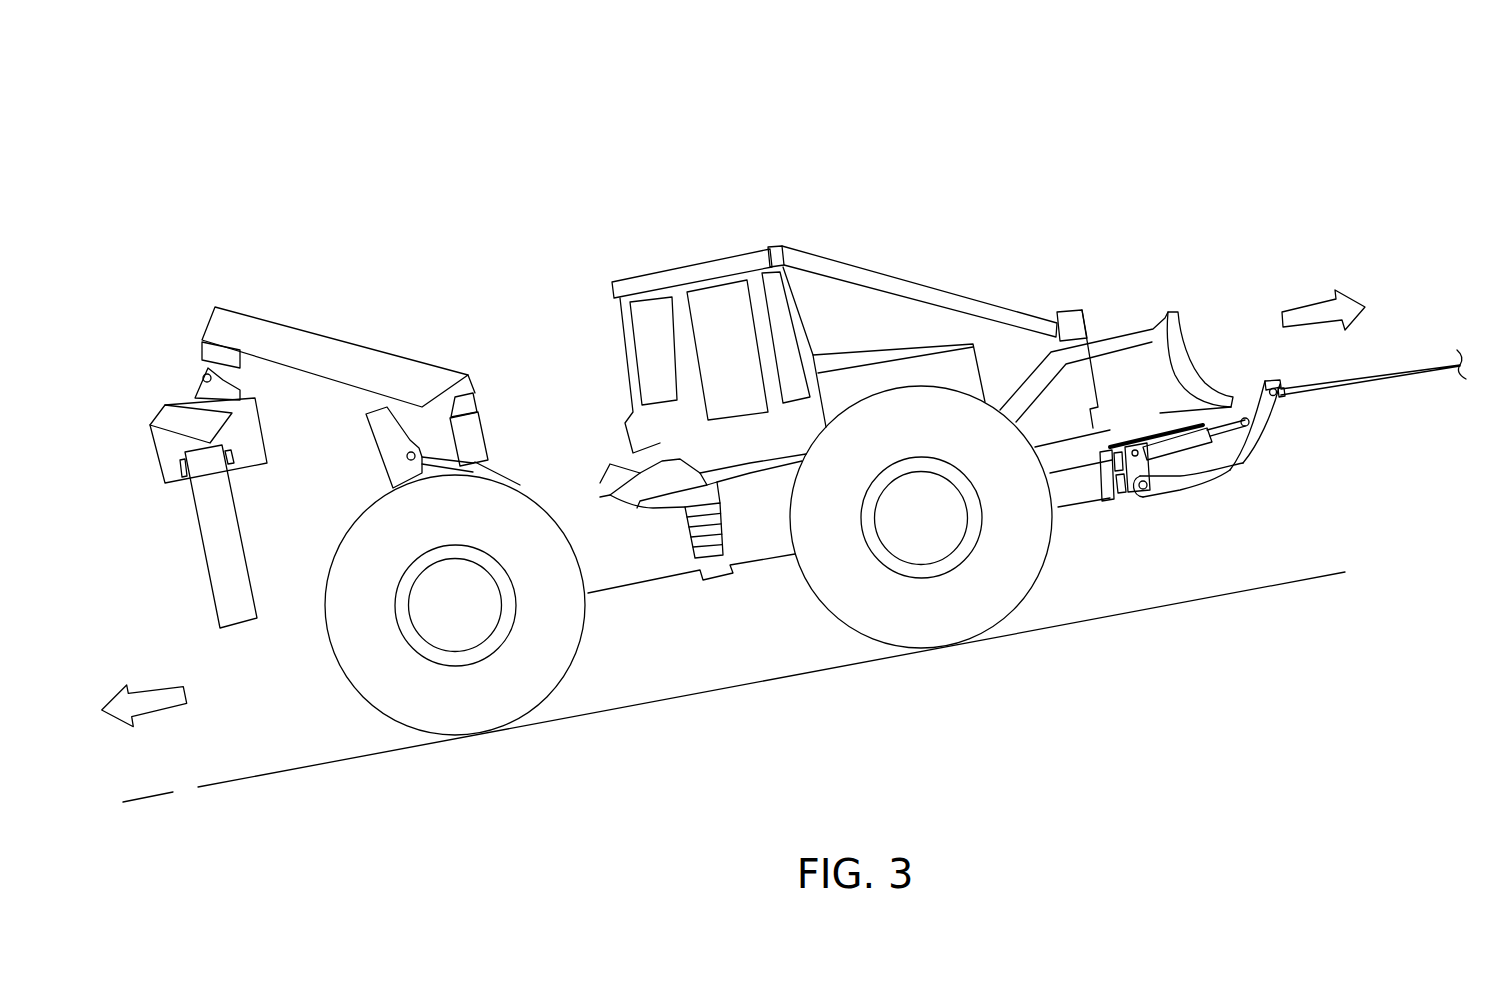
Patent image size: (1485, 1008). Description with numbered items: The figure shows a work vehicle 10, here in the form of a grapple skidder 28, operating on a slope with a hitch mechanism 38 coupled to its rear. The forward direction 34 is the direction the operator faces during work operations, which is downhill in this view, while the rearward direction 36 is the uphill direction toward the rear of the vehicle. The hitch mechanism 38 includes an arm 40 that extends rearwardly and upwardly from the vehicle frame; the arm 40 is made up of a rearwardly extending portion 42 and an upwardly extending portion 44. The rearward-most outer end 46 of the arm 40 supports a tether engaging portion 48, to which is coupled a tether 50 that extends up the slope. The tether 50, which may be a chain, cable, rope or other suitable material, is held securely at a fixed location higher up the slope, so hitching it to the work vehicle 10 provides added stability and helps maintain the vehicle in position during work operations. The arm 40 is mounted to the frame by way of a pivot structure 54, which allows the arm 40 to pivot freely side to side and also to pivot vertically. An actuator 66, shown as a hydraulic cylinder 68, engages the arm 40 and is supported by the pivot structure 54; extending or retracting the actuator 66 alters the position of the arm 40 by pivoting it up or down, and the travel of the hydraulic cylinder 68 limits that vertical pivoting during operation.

The work vehicle 10 is at (898, 85).
The grapple skidder 28 is at (673, 188).
The forward direction 34 is at (158, 700).
The rearward direction 36 is at (1310, 317).
The hitch mechanism 38 is at (1142, 537).
The arm 40 is at (1273, 433).
The rearwardly extending portion 42 is at (1215, 482).
The upwardly extending portion 44 is at (1282, 398).
The outer end 46 is at (1262, 384).
The tether engaging portion 48 is at (1274, 379).
The tether 50 is at (1367, 381).
The pivot structure 54 is at (1120, 527).
The actuator 66 is at (1169, 415).
The hydraulic cylinder 68 is at (1152, 446).